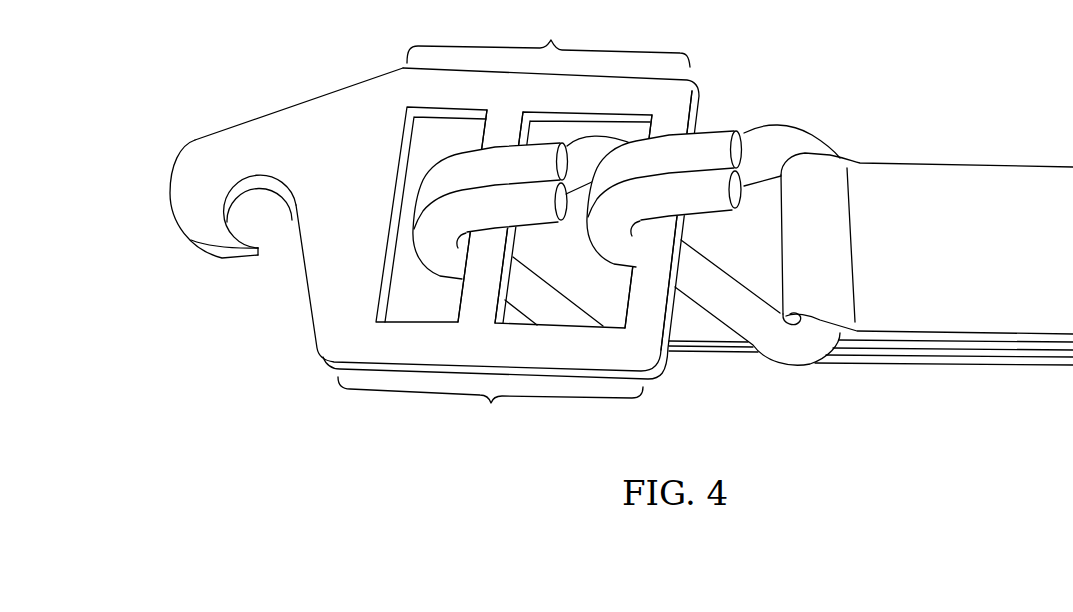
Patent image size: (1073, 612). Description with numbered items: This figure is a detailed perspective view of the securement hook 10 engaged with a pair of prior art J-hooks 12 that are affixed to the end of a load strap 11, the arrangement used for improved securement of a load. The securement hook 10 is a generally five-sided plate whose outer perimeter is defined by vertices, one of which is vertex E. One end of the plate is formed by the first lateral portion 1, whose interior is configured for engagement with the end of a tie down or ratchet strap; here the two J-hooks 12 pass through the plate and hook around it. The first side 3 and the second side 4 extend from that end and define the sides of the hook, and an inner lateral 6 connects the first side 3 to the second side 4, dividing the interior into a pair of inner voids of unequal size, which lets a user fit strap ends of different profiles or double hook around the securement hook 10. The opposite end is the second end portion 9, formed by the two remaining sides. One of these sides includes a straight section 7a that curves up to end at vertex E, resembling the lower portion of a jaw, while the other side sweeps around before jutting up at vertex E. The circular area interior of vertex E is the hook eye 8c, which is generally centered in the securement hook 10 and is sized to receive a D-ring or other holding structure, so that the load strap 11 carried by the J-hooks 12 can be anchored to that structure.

The first lateral portion 1 is at (657, 285).
The first side 3 is at (548, 44).
The second side 4 is at (490, 402).
The inner lateral 6 is at (485, 300).
The straight section 7a is at (312, 97).
The hook eye 8c is at (264, 215).
The second end portion 9 is at (350, 175).
The securement hook 10 is at (621, 224).
The load strap 11 is at (978, 185).
The J-hooks 12 is at (506, 153).
The vertex E is at (267, 258).